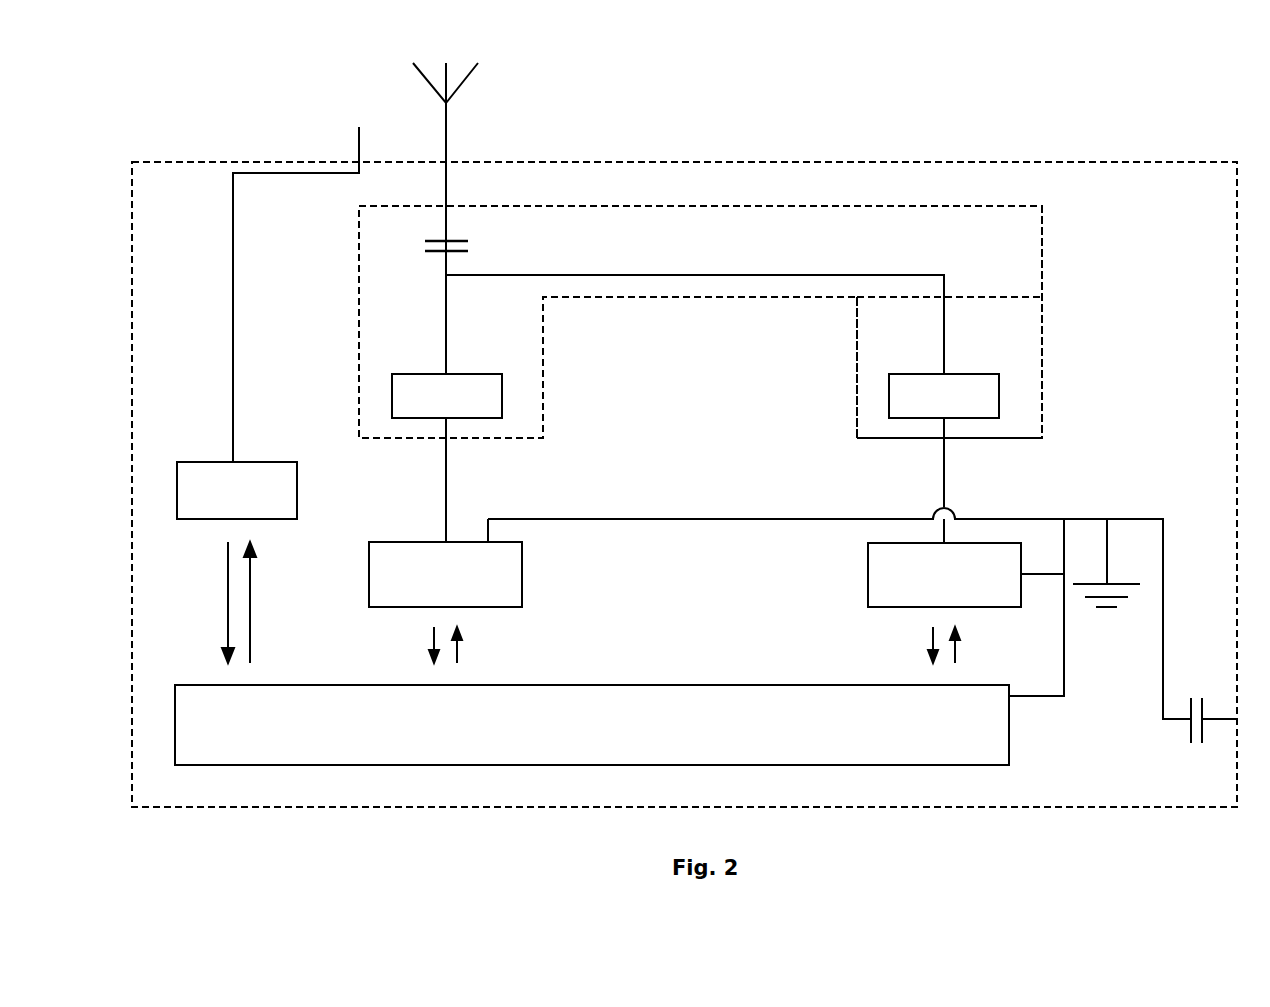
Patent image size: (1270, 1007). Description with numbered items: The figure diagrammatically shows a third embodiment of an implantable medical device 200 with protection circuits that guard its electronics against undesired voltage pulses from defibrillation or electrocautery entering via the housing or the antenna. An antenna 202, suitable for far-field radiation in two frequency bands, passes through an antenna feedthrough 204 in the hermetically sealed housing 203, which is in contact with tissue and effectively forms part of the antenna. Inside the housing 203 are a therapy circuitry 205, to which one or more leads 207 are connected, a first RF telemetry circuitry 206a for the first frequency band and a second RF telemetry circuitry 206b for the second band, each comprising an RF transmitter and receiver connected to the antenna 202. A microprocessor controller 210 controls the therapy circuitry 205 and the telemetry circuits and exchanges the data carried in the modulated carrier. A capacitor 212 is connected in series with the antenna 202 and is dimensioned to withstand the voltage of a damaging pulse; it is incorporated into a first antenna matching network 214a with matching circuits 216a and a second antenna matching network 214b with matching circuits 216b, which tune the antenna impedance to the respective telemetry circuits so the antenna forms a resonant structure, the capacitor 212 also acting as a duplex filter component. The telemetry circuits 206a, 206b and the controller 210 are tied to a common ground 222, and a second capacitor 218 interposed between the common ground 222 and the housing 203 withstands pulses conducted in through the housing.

The implantable medical device 200 is at (659, 435).
The antenna 202 is at (446, 103).
The housing 203 is at (732, 161).
The antenna feedthrough 204 is at (440, 160).
The therapy circuitry 205 is at (177, 484).
The first RF telemetry circuitry 206a is at (369, 583).
The second RF telemetry circuitry 206b is at (868, 573).
The leads 207 is at (233, 300).
The microprocessor controller 210 is at (670, 685).
The capacitor 212 is at (420, 252).
The first antenna matching network 214a is at (359, 370).
The second antenna matching network 214b is at (1043, 282).
The matching circuits 216a is at (502, 392).
The matching circuits 216b is at (889, 395).
The second capacitor 218 is at (1192, 707).
The common ground 222 is at (1115, 610).